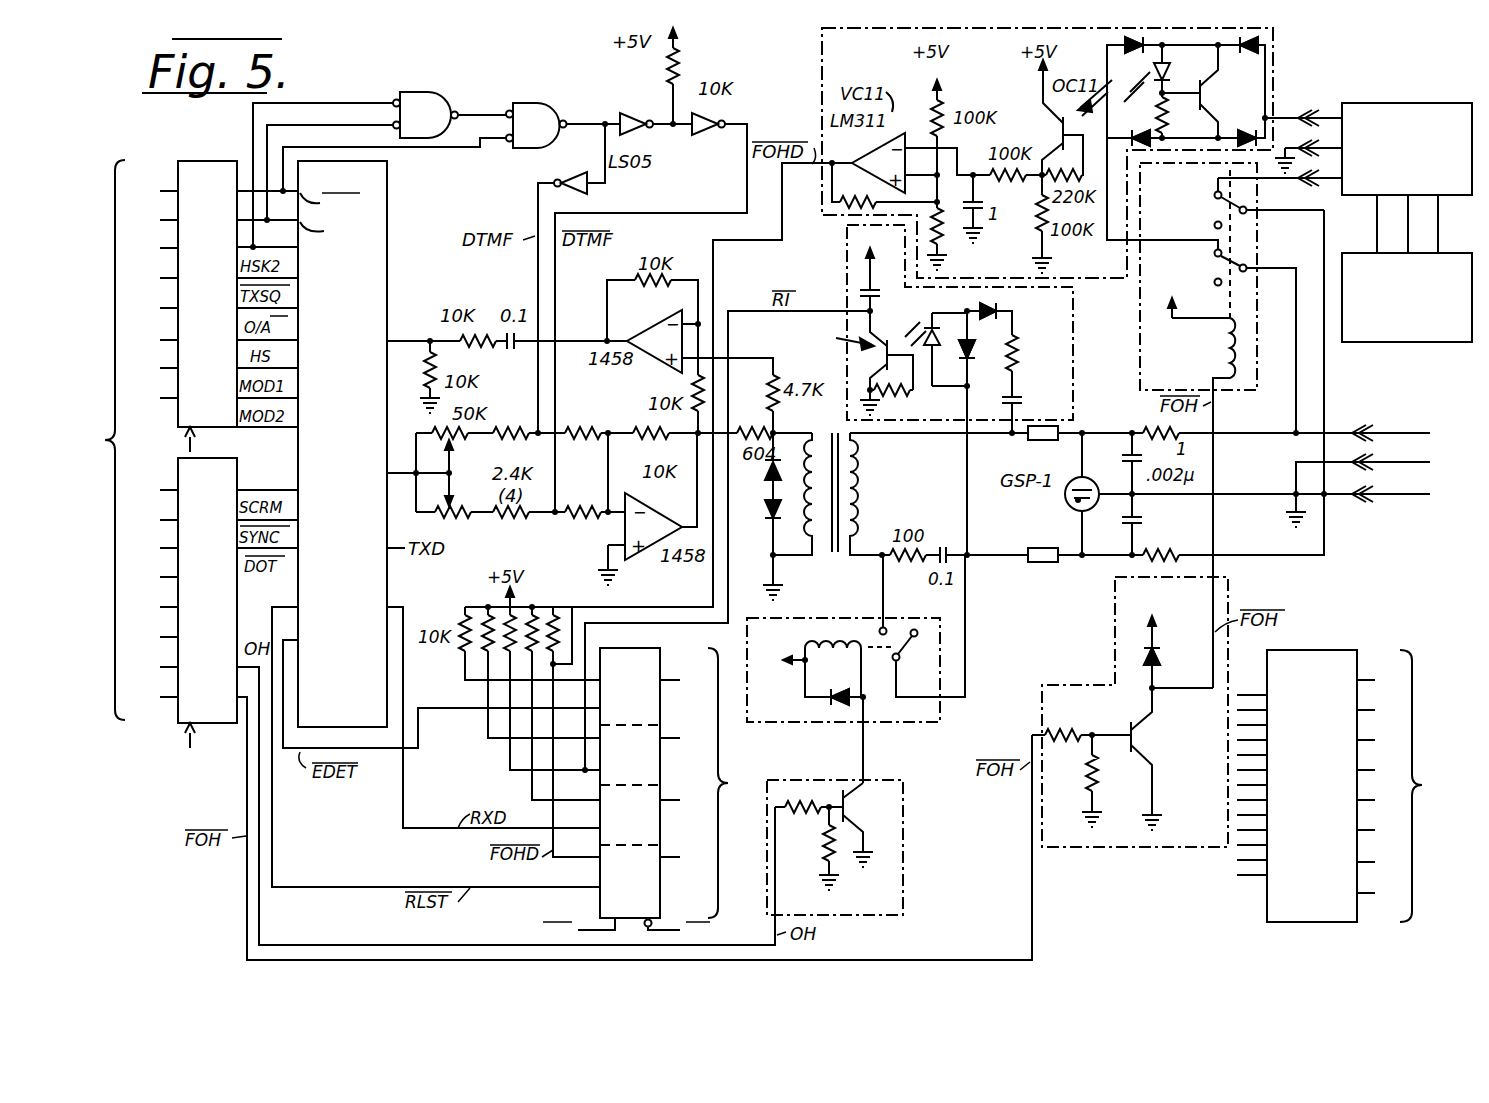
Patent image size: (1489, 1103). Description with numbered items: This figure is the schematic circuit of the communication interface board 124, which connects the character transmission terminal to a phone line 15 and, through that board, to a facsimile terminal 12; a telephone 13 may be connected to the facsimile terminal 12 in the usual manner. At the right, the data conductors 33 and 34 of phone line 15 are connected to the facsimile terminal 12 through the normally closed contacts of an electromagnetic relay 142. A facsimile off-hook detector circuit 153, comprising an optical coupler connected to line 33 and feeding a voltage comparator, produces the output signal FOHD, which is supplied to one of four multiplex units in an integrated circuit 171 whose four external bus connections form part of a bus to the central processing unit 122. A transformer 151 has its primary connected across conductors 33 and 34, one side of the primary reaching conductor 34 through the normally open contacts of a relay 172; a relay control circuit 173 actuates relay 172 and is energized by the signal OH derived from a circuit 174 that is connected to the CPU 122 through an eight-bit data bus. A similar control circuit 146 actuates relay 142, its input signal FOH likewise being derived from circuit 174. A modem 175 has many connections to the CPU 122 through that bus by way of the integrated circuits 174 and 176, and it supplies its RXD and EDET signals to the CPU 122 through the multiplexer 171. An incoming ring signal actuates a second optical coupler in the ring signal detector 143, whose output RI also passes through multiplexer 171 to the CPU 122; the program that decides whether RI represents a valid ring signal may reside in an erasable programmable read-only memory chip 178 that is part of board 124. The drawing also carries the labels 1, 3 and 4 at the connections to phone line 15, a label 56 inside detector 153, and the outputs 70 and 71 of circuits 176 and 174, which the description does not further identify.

The facsimile terminal 12 is at (1442, 103).
The telephone 13 is at (1398, 344).
The phone line 15 is at (1424, 463).
The phone line conductor 1 is at (1363, 467).
The phone line conductor 3 is at (1368, 425).
The phone line conductor 4 is at (1358, 506).
The data conductor 33 is at (1266, 432).
The data conductor 34 is at (1276, 563).
The optocoupler LED 56 is at (1144, 91).
The output port 70 is at (227, 441).
The output port 71 is at (187, 778).
The central processing unit 122 is at (768, 541).
The communication interface board 124 is at (533, 82).
The electromagnetic relay 142 is at (1255, 244).
The ring signal detector 143 is at (1078, 392).
The control circuit 146 is at (1170, 852).
The transformer 151 is at (832, 566).
The facsimile off-hook detector circuit 153 is at (1222, 143).
The integrated circuit 171 is at (644, 650).
The relay 172 is at (898, 728).
The relay control circuit 173 is at (906, 860).
The circuit 174 is at (175, 723).
The modem 175 is at (390, 212).
The integrated circuit 176 is at (186, 160).
The erasable programmable read-only memory chip 178 is at (1304, 650).